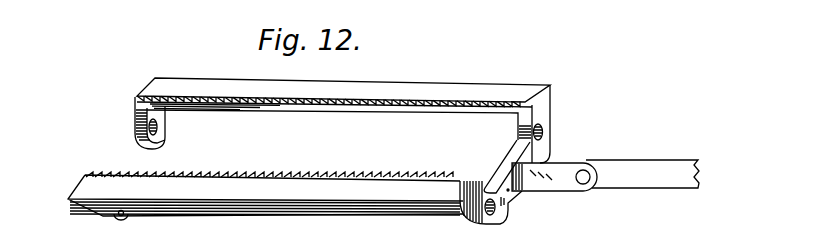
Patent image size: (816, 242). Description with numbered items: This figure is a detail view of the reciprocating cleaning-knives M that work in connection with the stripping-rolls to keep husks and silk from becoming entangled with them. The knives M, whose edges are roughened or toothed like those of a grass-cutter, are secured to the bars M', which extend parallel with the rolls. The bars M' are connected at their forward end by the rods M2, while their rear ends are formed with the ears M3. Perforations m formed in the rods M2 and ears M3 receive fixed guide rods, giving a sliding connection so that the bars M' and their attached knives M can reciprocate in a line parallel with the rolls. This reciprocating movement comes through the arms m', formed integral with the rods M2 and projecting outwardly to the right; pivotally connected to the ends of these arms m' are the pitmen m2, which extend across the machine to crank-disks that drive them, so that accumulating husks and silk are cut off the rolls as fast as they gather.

The cleaning-knives M is at (309, 139).
The bars M' is at (294, 175).
The rods M2 is at (514, 152).
The ears M3 is at (166, 120).
The perforations m is at (366, 170).
The arms m' is at (554, 161).
The pitmen m2 is at (657, 183).